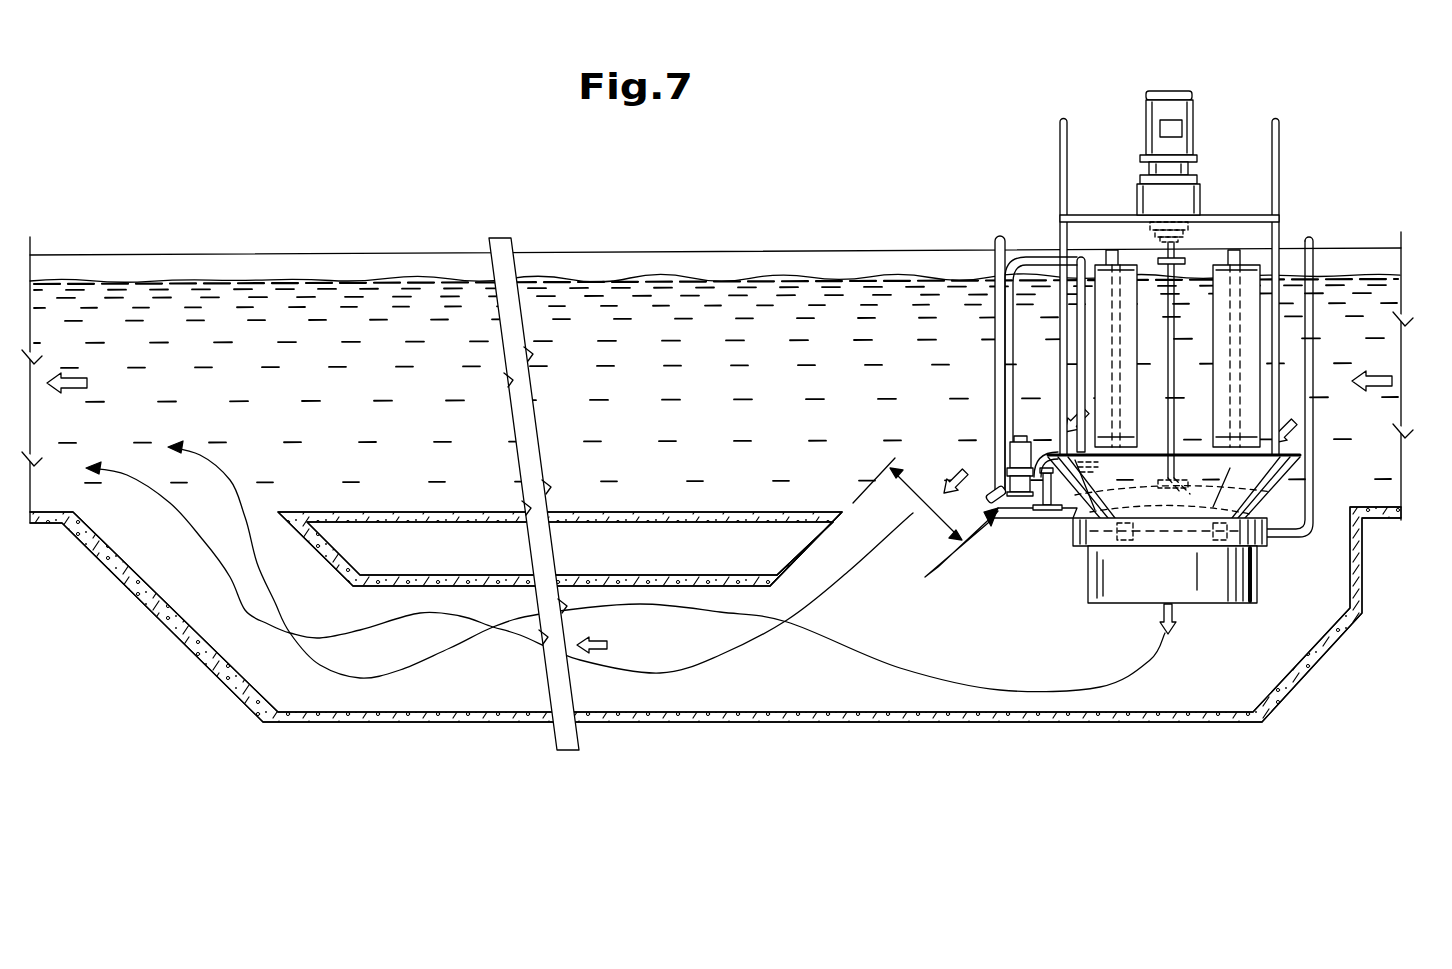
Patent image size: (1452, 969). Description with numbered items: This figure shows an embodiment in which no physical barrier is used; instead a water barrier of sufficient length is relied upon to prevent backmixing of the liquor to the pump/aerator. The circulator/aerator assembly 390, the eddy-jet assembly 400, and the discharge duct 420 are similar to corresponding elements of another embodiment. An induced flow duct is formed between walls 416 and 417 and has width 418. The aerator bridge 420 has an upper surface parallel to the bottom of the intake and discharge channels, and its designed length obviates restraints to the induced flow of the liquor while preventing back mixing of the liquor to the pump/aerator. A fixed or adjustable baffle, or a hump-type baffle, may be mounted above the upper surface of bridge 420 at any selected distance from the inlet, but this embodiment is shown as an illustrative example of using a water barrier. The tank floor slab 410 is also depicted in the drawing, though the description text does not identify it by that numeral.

The circulator/aerator assembly 390 is at (1210, 119).
The eddy-jet assembly 400 is at (1026, 433).
The tank floor slab 410 is at (1035, 731).
The wall 416 is at (826, 531).
The wall 417 is at (964, 553).
The width 418 is at (903, 483).
The aerator bridge 420 is at (602, 504).